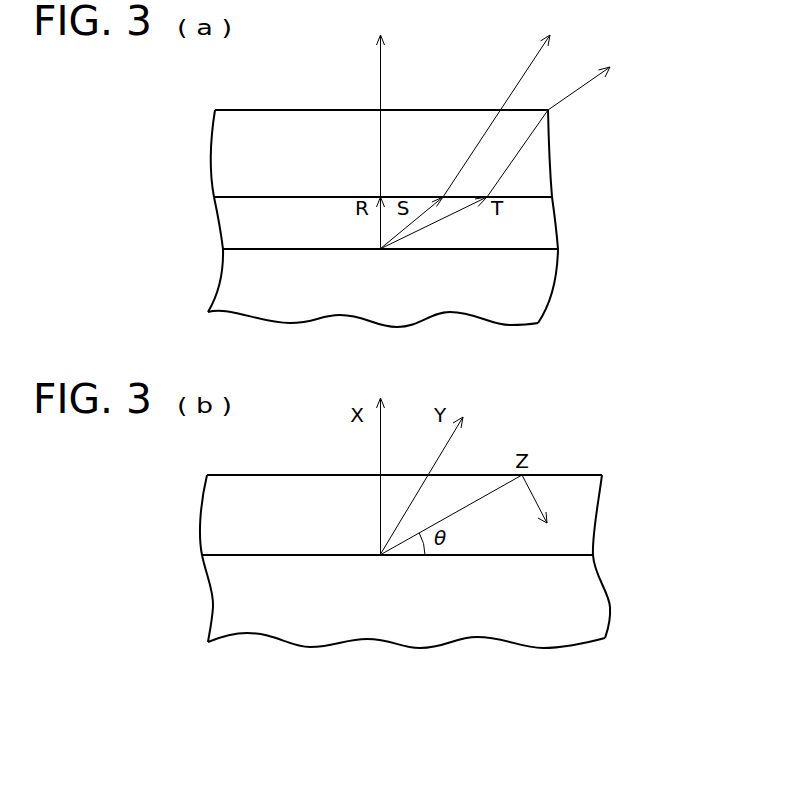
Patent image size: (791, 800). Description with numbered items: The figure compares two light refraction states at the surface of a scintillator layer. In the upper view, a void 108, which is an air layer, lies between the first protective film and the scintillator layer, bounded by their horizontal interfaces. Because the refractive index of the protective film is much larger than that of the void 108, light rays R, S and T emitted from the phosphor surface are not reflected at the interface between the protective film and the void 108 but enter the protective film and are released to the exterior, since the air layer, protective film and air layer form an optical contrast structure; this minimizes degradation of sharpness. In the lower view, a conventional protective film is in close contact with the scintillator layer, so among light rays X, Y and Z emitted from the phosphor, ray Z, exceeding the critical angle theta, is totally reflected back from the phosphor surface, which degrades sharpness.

The void 108 is at (538, 228).